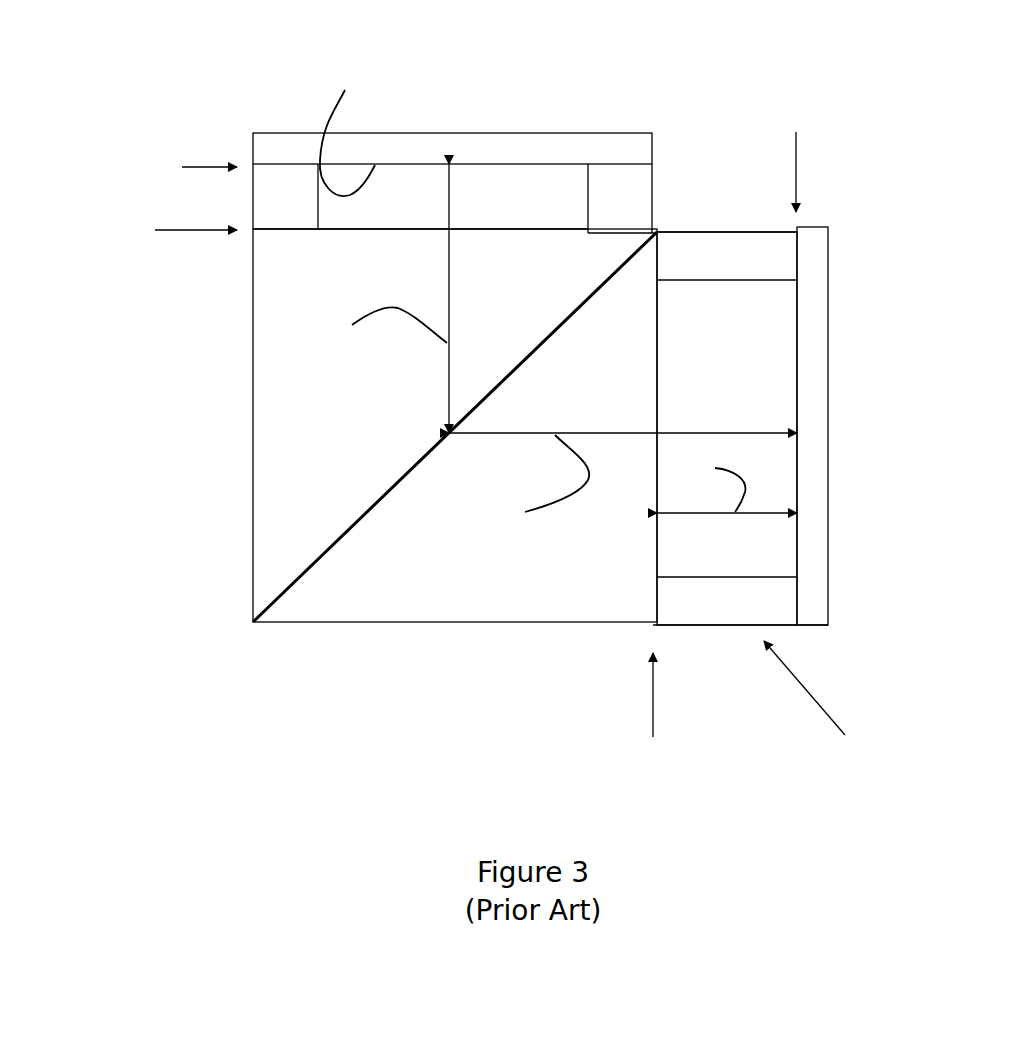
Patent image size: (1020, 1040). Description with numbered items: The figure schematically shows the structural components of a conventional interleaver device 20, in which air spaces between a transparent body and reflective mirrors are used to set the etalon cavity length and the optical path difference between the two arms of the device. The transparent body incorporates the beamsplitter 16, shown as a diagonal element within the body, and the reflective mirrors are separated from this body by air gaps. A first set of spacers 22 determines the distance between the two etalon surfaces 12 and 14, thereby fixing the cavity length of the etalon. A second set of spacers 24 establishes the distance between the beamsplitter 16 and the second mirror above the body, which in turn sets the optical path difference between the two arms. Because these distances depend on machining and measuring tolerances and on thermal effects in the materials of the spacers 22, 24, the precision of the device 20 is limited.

The conventional interleaver device 20 is at (495, 99).
The second set of spacers 24 is at (253, 218).
The first set of spacers 22 is at (765, 231).
The reflective mirror 14 is at (797, 340).
The etalon surface 12 is at (657, 545).
The beamsplitter 16 is at (322, 565).